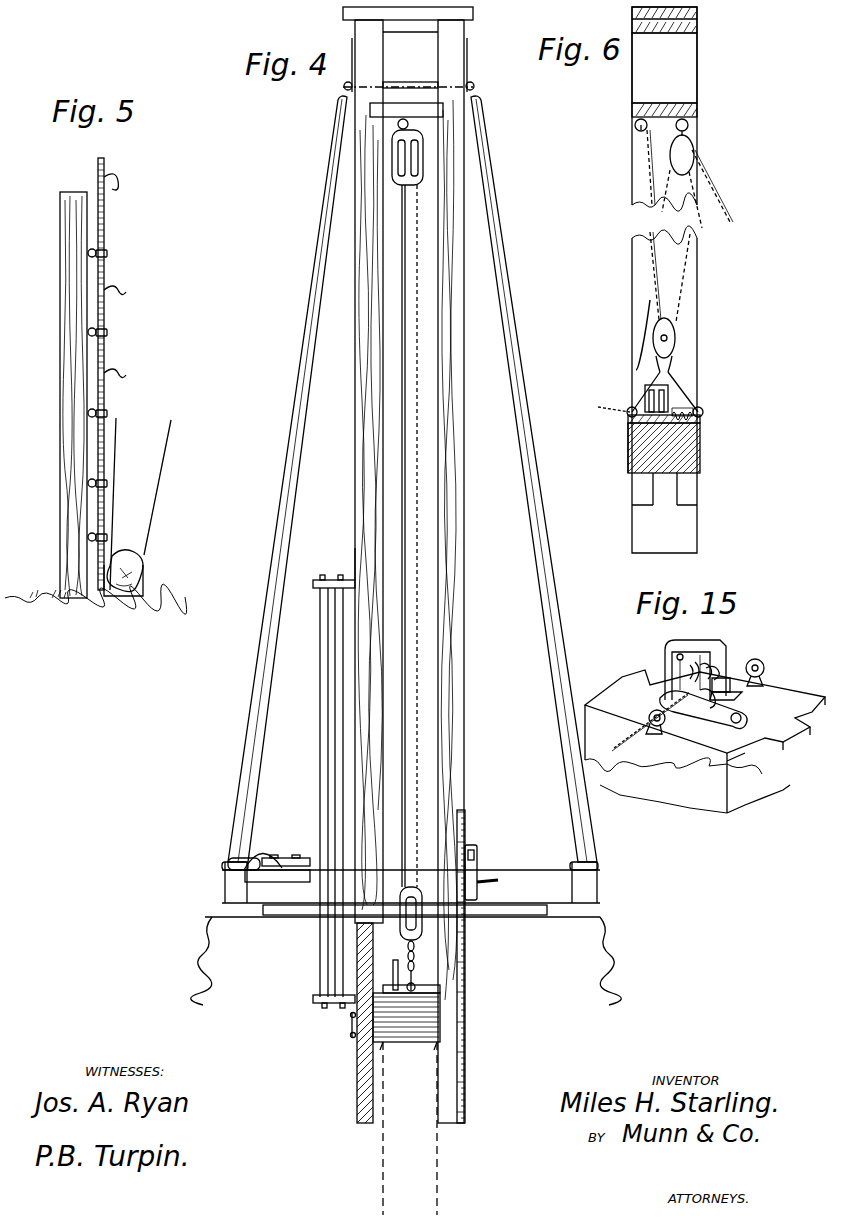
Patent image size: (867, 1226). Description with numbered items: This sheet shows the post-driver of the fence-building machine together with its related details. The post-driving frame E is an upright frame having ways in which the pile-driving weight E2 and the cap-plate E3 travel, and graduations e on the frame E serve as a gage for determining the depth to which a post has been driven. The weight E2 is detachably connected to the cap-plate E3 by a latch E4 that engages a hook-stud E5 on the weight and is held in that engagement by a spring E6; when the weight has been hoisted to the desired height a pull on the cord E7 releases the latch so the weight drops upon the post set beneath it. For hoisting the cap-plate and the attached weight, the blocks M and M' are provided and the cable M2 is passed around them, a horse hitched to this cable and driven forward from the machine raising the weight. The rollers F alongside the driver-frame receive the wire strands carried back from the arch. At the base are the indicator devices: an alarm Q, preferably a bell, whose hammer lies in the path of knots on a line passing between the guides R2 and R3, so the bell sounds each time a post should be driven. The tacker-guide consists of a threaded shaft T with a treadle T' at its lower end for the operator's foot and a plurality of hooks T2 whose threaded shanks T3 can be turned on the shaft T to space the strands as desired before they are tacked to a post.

In FIG. 4, the block M' is at (463, 152).
In FIG. 6, the block M' is at (717, 147).
In FIG. 4, the cable M2 is at (420, 455).
In FIG. 6, the cable M2 is at (650, 270).
In FIG. 4, the block M is at (351, 939).
In FIG. 6, the block M is at (682, 358).
In FIG. 4, the post-driving frame E is at (456, 750).
In FIG. 6, the post-driving frame E is at (678, 389).
In FIG. 4, the graduations e is at (466, 820).
In FIG. 4, the rollers F is at (330, 650).
In FIG. 4, the alarm Q is at (260, 856).
In FIG. 4, the guide R2 is at (278, 868).
In FIG. 4, the guide R3 is at (296, 872).
In FIG. 4, the weight E2 is at (406, 1104).
In FIG. 6, the weight E2 is at (700, 452).
In FIG. 15, the weight E2 is at (728, 800).
In FIG. 4, the cap-plate E3 is at (440, 996).
In FIG. 6, the cap-plate E3 is at (700, 419).
In FIG. 15, the cap-plate E3 is at (750, 735).
In FIG. 6, the latch E4 is at (628, 434).
In FIG. 15, the latch E4 is at (712, 712).
In FIG. 6, the hook-stud E5 is at (690, 410).
In FIG. 15, the hook-stud E5 is at (720, 696).
In FIG. 6, the spring E6 is at (670, 396).
In FIG. 15, the spring E6 is at (712, 660).
In FIG. 6, the cord E7 is at (616, 398).
In FIG. 15, the cord E7 is at (628, 748).
In FIG. 5, the threaded shaft T is at (115, 374).
In FIG. 5, the hooks T2 is at (126, 292).
In FIG. 5, the shanks T3 is at (118, 380).
In FIG. 5, the treadle T' is at (141, 507).